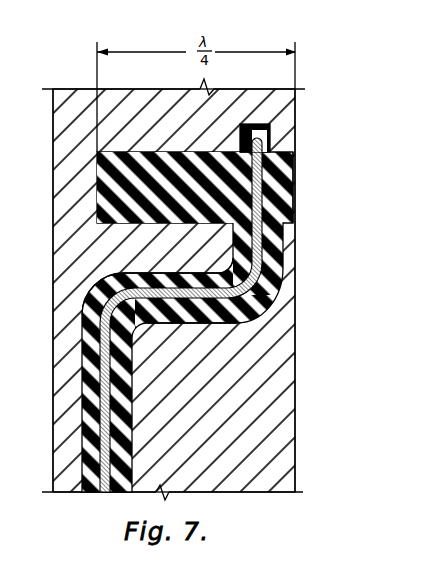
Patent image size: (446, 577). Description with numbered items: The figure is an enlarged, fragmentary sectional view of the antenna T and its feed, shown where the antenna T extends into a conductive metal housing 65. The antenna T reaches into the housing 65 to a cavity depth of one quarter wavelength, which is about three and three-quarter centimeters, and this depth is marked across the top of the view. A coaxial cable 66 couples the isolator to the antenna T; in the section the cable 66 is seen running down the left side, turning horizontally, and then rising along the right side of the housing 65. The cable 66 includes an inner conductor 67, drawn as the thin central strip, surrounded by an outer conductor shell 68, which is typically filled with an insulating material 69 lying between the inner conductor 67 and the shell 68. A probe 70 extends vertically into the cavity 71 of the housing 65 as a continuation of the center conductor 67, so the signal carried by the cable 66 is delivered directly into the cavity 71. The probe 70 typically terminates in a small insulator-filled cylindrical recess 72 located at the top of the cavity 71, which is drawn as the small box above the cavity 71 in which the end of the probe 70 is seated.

The conductive metal housing 65 is at (288, 108).
The coaxial cable 66 is at (210, 326).
The inner conductor 67 is at (150, 288).
The outer conductor shell 68 is at (92, 289).
The insulating material 69 is at (211, 281).
The probe 70 is at (288, 197).
The cavity 71 is at (99, 172).
The insulator-filled cylindrical recess 72 is at (271, 133).
The antenna T is at (289, 170).